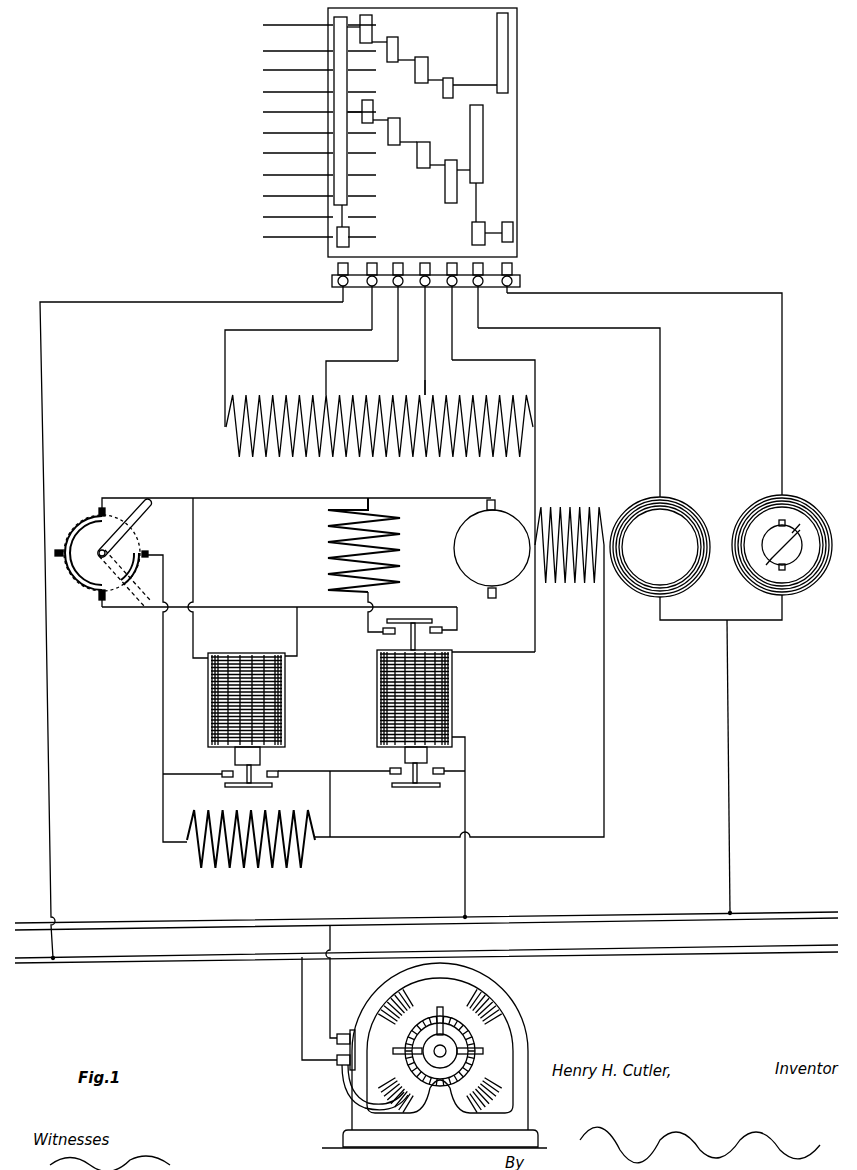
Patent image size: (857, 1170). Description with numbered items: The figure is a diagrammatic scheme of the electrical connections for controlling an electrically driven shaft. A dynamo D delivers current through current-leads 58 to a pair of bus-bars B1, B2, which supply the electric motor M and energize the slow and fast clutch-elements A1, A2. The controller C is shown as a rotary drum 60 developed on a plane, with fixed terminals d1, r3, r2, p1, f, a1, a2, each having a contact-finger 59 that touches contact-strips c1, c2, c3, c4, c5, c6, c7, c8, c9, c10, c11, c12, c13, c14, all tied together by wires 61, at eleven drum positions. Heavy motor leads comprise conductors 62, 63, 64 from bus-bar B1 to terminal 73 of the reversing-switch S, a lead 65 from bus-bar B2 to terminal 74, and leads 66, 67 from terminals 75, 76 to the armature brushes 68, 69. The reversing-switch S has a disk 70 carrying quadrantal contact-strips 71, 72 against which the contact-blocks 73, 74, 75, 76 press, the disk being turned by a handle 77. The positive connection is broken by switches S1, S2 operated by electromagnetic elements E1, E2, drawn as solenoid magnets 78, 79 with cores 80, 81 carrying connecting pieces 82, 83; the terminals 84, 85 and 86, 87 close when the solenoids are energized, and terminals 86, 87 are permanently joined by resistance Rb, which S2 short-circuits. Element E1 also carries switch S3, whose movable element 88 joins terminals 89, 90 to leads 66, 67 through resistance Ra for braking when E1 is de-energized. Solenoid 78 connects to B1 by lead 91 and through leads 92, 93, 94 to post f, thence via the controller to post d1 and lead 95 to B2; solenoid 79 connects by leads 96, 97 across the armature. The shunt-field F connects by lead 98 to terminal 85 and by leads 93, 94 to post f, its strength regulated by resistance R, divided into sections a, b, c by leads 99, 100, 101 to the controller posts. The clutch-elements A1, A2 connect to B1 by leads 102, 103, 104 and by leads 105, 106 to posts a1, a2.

The current-leads 58 is at (330, 1000).
The contact-finger 59 is at (380, 257).
The drum 60 is at (517, 120).
The wires 61 is at (476, 205).
The conductor 62 is at (465, 878).
The conductor 63 is at (330, 755).
The conductor 64 is at (163, 760).
The lead 65 is at (50, 760).
The lead 66 is at (279, 596).
The lead 67 is at (318, 490).
The brush 68 is at (497, 598).
The brush 69 is at (495, 502).
The disk 70 is at (140, 532).
The quadrantal contact-strip 71 is at (130, 585).
The quadrantal contact-strip 72 is at (78, 524).
The brush or contact-block 73 is at (148, 553).
The brush or contact-block 74 is at (57, 576).
The brush or contact-block 75 is at (98, 602).
The brush or contact-block 76 is at (104, 507).
The handle 77 is at (147, 492).
The solenoid magnet 78 is at (377, 690).
The solenoid magnet 79 is at (270, 655).
The core or armature 80 is at (452, 762).
The core or armature 81 is at (278, 770).
The connecting piece 82 is at (400, 787).
The connecting piece 83 is at (232, 786).
The terminal 84 is at (436, 787).
The terminal 85 is at (392, 768).
The terminal 86 is at (318, 766).
The terminal 87 is at (222, 770).
The movable element 88 is at (436, 615).
The terminal 89 is at (442, 633).
The terminal 90 is at (383, 634).
The lead 91 is at (465, 752).
The lead 92 is at (535, 660).
The lead 93 is at (535, 468).
The lead 94 is at (478, 361).
The lead 95 is at (192, 295).
The lead 96 is at (297, 672).
The lead 97 is at (193, 572).
The lead 98 is at (604, 752).
The lead 99 is at (423, 372).
The lead 100 is at (386, 366).
The lead 101 is at (306, 330).
The lead 102 is at (729, 770).
The lead 103 is at (690, 620).
The lead 104 is at (760, 620).
The lead 105 is at (545, 328).
The lead 106 is at (612, 293).
The controller C is at (390, 132).
The contact-strip c1 is at (349, 234).
The contact-strip c2 is at (472, 236).
The contact-strip c3 is at (513, 228).
The contact-strip c4 is at (347, 190).
The contact-strip c5 is at (445, 195).
The contact-strip c6 is at (479, 144).
The contact-strip c7 is at (413, 164).
The contact-strip c8 is at (395, 128).
The contact-strip c9 is at (369, 111).
The contact-strip c10 is at (453, 88).
The contact-strip c11 is at (480, 53).
The contact-strip c12 is at (425, 68).
The contact-strip c13 is at (398, 44).
The contact-strip c14 is at (371, 29).
The terminal-post d1 is at (333, 281).
The terminal-post r3 is at (364, 308).
The terminal-post r2 is at (389, 323).
The terminal p1 is at (414, 340).
The terminal-post f is at (442, 323).
The terminal-post a1 is at (466, 307).
The terminal-post a2 is at (495, 298).
The resistance R is at (379, 438).
The resistance Ra is at (345, 565).
The resistance Rb is at (251, 854).
The section a is at (471, 382).
The section b is at (377, 384).
The section c is at (273, 384).
The reversing-switch S is at (115, 552).
The switch S1 is at (411, 780).
The switch S2 is at (230, 777).
The switch S3 is at (409, 618).
The electric motor M is at (492, 553).
The shunt-field F is at (569, 532).
The electromagnetic element E1 is at (411, 698).
The electromagnetic element E2 is at (233, 689).
The slow clutch-element A1 is at (660, 547).
The fast clutch-element A2 is at (782, 545).
The bus-bar B1 is at (88, 920).
The bus-bar B2 is at (102, 958).
The dynamo D is at (434, 1055).